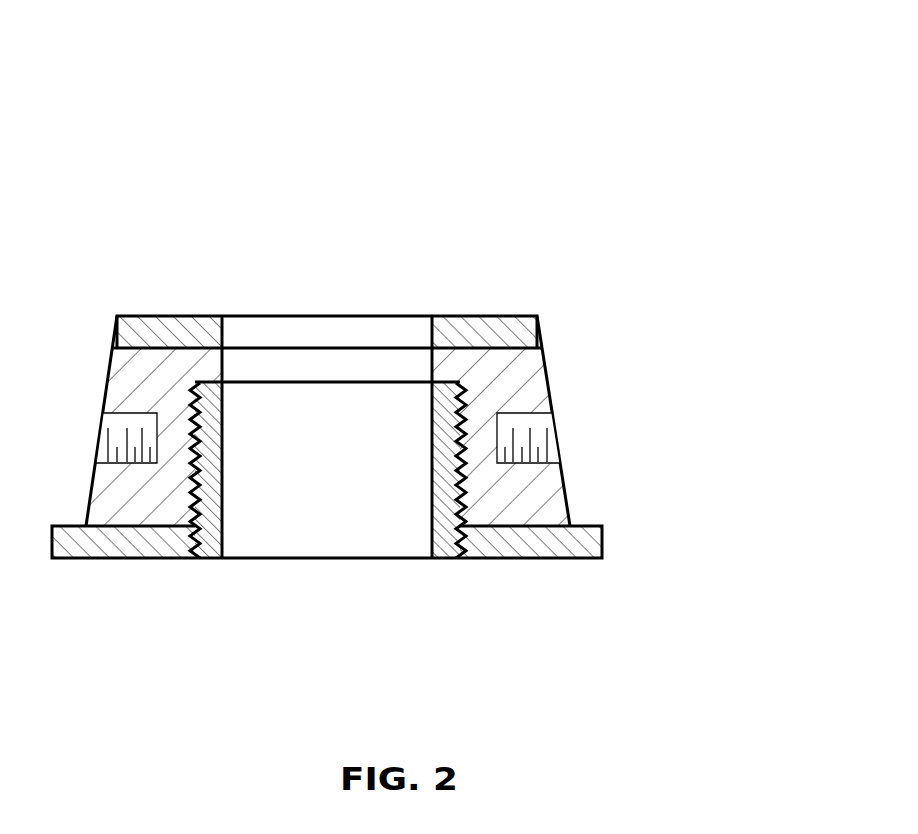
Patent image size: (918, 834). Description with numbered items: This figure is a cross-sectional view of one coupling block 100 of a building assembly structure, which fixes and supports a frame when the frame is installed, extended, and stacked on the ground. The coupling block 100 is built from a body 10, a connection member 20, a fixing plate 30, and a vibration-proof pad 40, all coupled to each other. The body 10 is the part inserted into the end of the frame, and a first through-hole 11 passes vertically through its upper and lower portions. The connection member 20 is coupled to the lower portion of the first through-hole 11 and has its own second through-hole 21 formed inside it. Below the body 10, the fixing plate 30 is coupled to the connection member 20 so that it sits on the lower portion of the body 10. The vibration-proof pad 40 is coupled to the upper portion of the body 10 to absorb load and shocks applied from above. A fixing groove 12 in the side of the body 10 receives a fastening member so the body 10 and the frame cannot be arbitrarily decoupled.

The coupling block 100 is at (449, 190).
The body 10 is at (530, 378).
The first through-hole 11 is at (295, 367).
The fixing groove 12 is at (535, 437).
The connection member 20 is at (210, 520).
The second through-hole 21 is at (345, 490).
The fixing plate 30 is at (517, 542).
The vibration-proof pad 40 is at (480, 324).